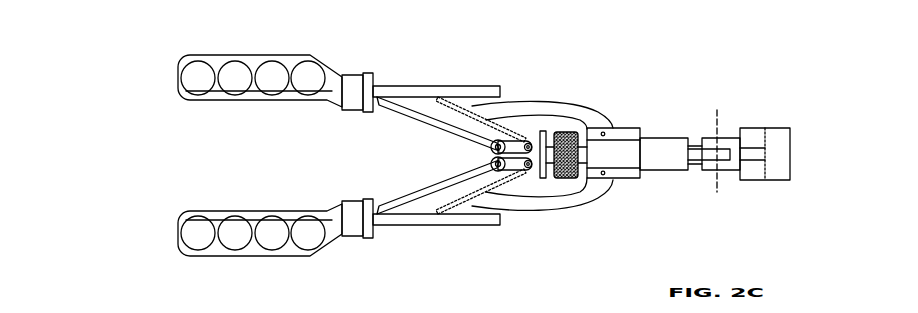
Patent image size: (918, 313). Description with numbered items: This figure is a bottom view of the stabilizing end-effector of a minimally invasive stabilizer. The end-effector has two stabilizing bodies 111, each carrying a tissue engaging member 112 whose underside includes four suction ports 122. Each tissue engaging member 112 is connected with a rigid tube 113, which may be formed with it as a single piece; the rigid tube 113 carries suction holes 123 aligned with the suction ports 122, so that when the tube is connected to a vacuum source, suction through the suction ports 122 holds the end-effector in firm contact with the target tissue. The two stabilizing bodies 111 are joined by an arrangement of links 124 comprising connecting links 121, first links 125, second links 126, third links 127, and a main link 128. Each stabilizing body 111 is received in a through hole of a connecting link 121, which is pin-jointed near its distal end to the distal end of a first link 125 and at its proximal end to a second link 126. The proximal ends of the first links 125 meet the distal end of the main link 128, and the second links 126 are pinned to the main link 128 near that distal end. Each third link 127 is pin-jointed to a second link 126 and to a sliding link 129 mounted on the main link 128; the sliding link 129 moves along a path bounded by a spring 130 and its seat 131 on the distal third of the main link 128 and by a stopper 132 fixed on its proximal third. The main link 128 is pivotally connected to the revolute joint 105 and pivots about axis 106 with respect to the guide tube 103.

The guide tube 103 is at (790, 127).
The revolute joint 105 is at (735, 132).
The axis 106 is at (717, 193).
The stabilizing body 111 is at (185, 125).
The tissue engaging member 112 is at (312, 58).
The rigid tube 113 is at (467, 85).
The connecting link 121 is at (372, 76).
The suction port 122 is at (198, 76).
The suction hole 123 is at (270, 90).
The arrangement of links 124 is at (541, 229).
The first link 125 is at (438, 180).
The second link 126 is at (500, 122).
The third link 127 is at (572, 103).
The main link 128 is at (693, 166).
The sliding link 129 is at (622, 128).
The spring 130 is at (567, 178).
The seat 131 is at (540, 130).
The stopper 132 is at (673, 138).